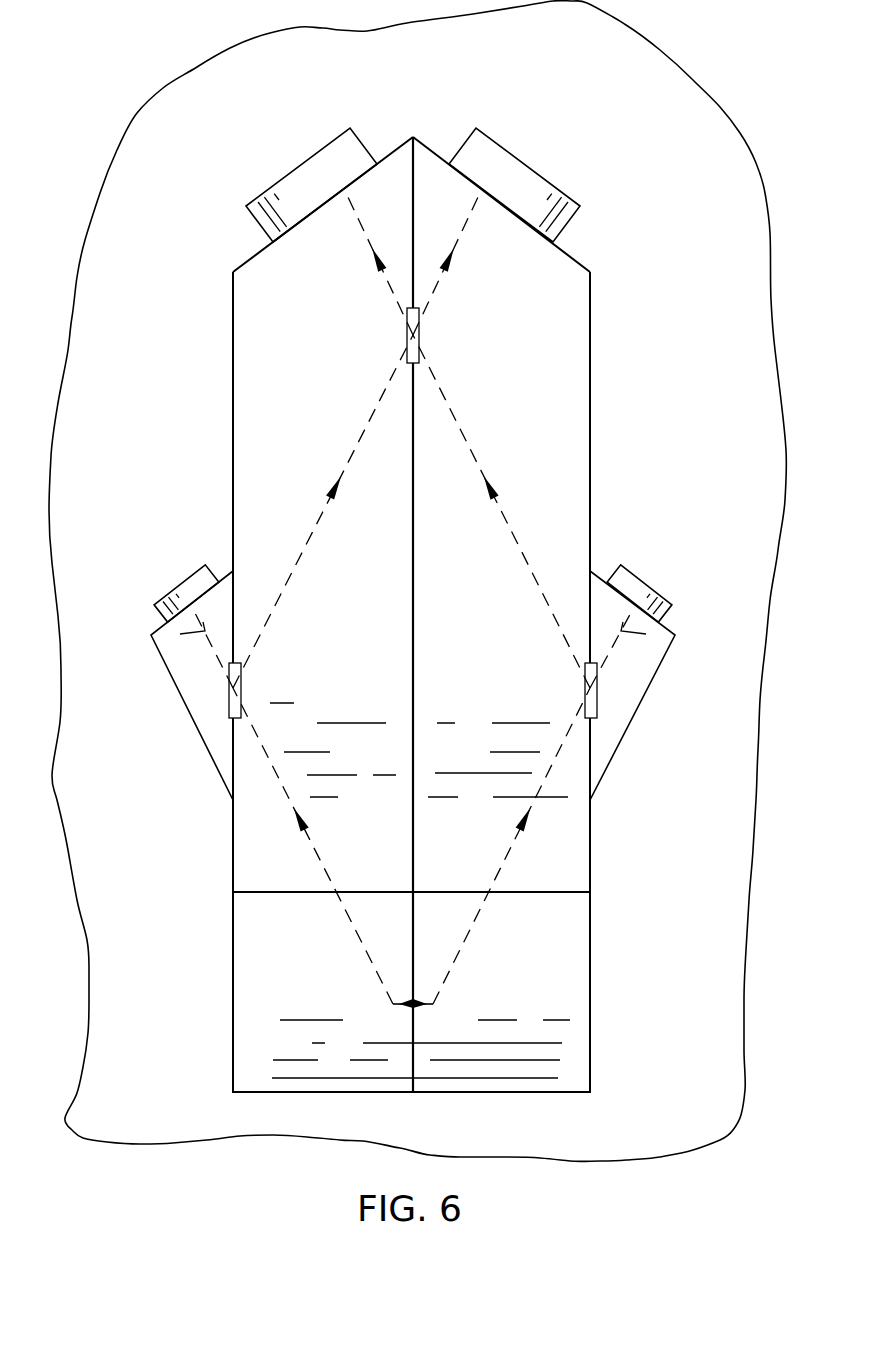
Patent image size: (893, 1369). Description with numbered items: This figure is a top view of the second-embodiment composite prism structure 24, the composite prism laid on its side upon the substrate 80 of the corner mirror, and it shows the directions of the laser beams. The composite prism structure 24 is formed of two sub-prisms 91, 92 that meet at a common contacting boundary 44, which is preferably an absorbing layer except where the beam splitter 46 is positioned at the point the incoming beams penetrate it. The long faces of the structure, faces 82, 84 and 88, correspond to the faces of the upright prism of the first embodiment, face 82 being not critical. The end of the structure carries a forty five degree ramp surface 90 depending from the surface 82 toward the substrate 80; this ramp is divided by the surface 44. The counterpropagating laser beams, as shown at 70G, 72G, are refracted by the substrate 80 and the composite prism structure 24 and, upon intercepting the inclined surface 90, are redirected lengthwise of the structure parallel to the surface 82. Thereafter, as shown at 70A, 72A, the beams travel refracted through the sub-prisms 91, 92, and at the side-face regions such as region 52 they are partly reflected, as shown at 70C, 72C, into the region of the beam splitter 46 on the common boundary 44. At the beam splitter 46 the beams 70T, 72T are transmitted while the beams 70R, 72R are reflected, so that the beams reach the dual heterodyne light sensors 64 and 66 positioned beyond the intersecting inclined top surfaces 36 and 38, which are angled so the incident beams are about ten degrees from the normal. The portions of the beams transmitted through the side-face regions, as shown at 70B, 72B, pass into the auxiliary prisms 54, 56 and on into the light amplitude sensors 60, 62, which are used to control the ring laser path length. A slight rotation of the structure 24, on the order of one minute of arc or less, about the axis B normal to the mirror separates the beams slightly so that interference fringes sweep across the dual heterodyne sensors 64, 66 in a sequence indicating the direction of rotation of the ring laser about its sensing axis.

The composite prism structure 24 is at (610, 490).
The inclined planar top surface 36 is at (395, 165).
The inclined planar top surface 38 is at (578, 246).
The interface surface 44 is at (413, 722).
The beam splitter mirror 46 is at (418, 338).
The reflecting and transmitting region 52 is at (598, 705).
The auxiliary prism 54 is at (210, 729).
The auxiliary prism 56 is at (616, 729).
The light amplitude sensor 60 is at (177, 595).
The light amplitude sensor 62 is at (650, 595).
The dual heterodyne light sensor 64 is at (345, 155).
The dual heterodyne light sensor 66 is at (547, 187).
The refracted laser beam 70A is at (324, 862).
The transmitted laser beam 70B is at (151, 636).
The reflected laser beam 70C is at (298, 577).
The refracted laser beam 70G is at (397, 1006).
The transmitted laser beam 70T is at (496, 265).
The reflected laser beam 70R is at (380, 264).
The refracted laser beam 72A is at (506, 862).
The transmitted laser beam 72B is at (675, 636).
The reflected laser beam 72C is at (528, 577).
The refracted laser beam 72G is at (430, 1006).
The transmitted laser beam 72T is at (330, 265).
The reflected laser beam 72R is at (446, 264).
The substrate 80 is at (706, 968).
The prism face 82 is at (572, 370).
The prism face 84 is at (592, 442).
The prism face 88 is at (236, 443).
The forty five degree ramp surface 90 is at (565, 1008).
The sub-prism 91 is at (260, 862).
The sub-prism 92 is at (566, 862).
The rotation axis B is at (417, 1000).